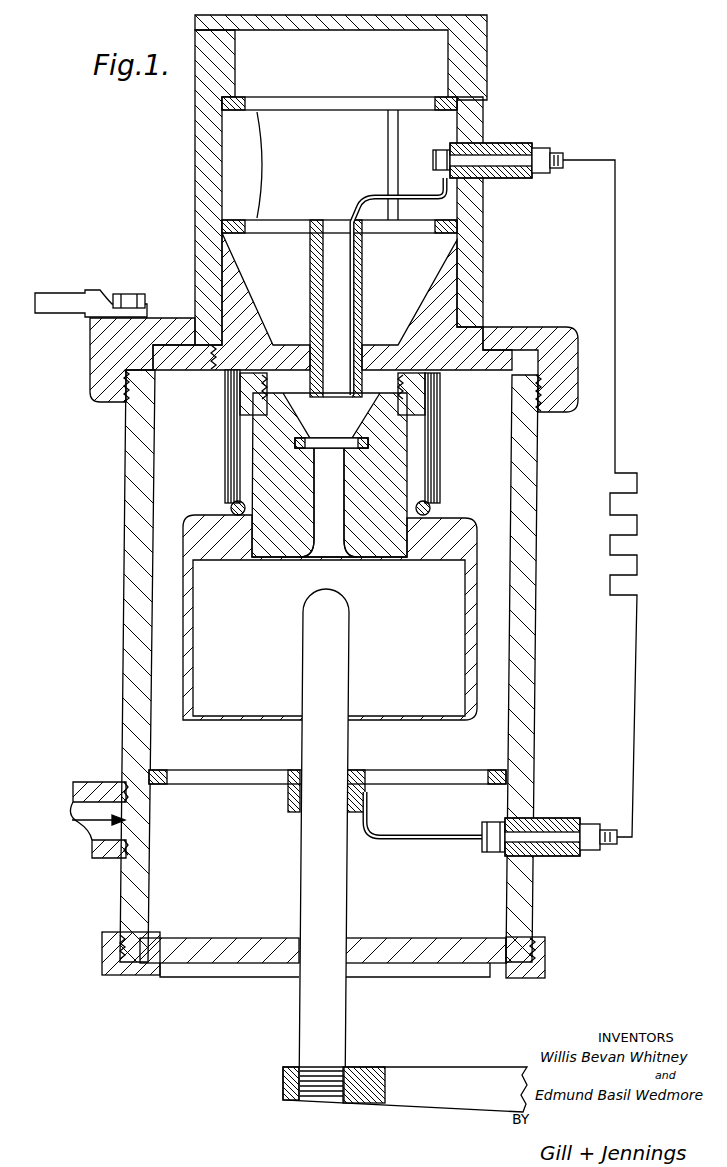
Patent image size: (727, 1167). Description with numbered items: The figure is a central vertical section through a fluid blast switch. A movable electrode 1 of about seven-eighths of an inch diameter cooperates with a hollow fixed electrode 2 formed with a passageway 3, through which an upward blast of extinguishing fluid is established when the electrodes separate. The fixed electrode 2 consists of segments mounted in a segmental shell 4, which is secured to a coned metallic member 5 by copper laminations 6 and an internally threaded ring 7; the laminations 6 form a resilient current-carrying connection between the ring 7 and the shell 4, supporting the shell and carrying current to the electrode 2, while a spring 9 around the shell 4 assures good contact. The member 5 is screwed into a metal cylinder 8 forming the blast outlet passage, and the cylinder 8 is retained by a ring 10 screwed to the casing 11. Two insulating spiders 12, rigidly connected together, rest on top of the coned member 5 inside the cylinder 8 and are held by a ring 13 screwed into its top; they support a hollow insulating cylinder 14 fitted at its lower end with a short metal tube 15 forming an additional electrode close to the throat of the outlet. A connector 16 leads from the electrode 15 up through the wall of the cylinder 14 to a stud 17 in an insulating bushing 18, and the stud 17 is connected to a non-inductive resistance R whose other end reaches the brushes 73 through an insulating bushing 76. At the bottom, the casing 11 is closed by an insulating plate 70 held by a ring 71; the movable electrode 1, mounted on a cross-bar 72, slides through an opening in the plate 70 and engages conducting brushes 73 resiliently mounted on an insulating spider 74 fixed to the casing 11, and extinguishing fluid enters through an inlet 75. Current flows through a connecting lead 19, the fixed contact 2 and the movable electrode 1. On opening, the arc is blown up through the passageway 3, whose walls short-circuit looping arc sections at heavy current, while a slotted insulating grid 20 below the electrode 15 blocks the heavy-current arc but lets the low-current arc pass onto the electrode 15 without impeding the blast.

The movable electrode 1 is at (334, 658).
The fixed electrode 2 is at (295, 536).
The passageway 3 is at (330, 548).
The segmental shell 4 is at (431, 516).
The coned metallic member 5 is at (455, 336).
The copper laminations 6 is at (232, 433).
The internally threaded ring 7 is at (420, 403).
The metal cylinder 8 is at (470, 276).
The spring 9 is at (232, 507).
The ring 10 is at (100, 366).
The casing 11 is at (143, 470).
The spiders 12 is at (339, 158).
The ring 13 is at (467, 33).
The hollow cylinder 14 is at (309, 252).
The metal tube 15 is at (240, 381).
The connector 16 is at (382, 192).
The stud 17 is at (432, 156).
The insulating bushing 18 is at (500, 146).
The connecting lead 19 is at (54, 300).
The slotted plate 20 is at (345, 445).
The plate of insulating material 70 is at (209, 955).
The ring 71 is at (100, 947).
The cross-bar 72 is at (393, 1078).
The brushes 73 is at (347, 804).
The spider 74 is at (188, 773).
The inlet 75 is at (110, 788).
The insulating bushing 76 is at (547, 856).
The non-inductive resistance R is at (612, 498).